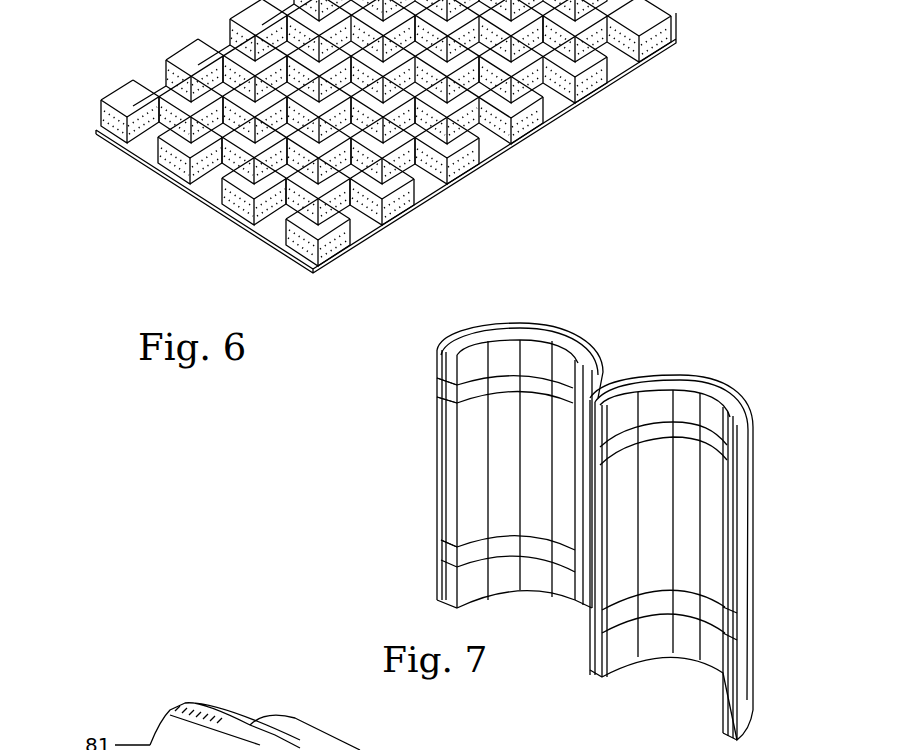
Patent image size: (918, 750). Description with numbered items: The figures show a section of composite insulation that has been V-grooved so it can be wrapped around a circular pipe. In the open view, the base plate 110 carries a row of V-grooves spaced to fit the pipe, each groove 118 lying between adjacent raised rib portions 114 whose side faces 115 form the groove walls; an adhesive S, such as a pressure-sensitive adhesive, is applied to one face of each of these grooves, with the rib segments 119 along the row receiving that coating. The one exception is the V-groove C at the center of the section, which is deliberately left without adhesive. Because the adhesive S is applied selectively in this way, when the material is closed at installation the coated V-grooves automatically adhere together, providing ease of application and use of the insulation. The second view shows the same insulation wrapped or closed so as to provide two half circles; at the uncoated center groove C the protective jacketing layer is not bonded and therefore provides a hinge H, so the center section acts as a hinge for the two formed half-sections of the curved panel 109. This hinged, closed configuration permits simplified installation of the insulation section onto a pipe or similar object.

In FIG. 6, the rib 114 is at (98, 126).
In FIG. 7, the rib 114 is at (437, 496).
In FIG. 6, the groove 118 is at (130, 152).
In FIG. 7, the groove 118 is at (440, 398).
In FIG. 6, the channel 115 is at (258, 162).
In FIG. 7, the channel 115 is at (463, 459).
In FIG. 6, the rib segment 119 is at (281, 216).
In FIG. 7, the rib segment 119 is at (437, 380).
In FIG. 6, the base plate 110 is at (313, 275).
In FIG. 7, the base plate 110 is at (440, 553).
In FIG. 6, the adhesive S is at (140, 100).
In FIG. 6, the V-groove C is at (537, 138).
In FIG. 7, the hinge H is at (600, 397).
In FIG. 7, the curved panel 109 is at (752, 550).